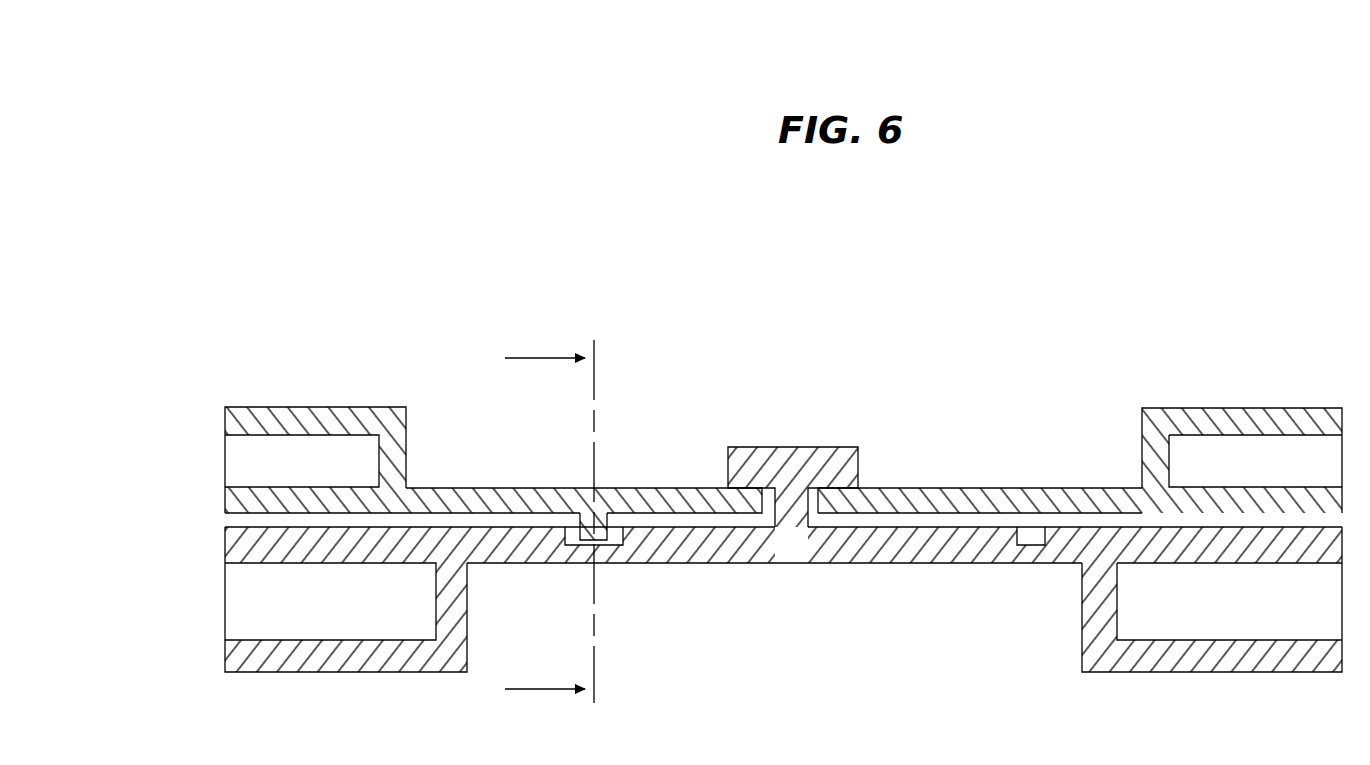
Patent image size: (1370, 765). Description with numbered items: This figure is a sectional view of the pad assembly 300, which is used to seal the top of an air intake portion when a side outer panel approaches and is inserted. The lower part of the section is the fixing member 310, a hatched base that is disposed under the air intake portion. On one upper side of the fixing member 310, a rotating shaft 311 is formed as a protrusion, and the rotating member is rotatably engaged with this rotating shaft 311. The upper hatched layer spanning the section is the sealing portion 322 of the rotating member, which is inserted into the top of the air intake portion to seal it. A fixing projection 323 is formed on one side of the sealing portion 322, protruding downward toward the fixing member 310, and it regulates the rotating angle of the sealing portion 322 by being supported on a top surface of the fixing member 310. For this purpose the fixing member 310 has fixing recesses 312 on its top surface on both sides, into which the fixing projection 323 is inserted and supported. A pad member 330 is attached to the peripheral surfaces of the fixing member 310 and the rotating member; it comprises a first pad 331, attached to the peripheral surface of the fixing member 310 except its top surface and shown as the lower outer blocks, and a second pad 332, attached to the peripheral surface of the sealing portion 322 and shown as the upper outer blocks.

The pad assembly 300 is at (958, 338).
The fixing member 310 is at (738, 550).
The rotating shaft 311 is at (800, 460).
The fixing recess 312 is at (570, 547).
The sealing portion 322 is at (523, 497).
The fixing projection 323 is at (602, 547).
The pad member 330 is at (86, 468).
The first pad 331 is at (255, 596).
The second pad 332 is at (255, 462).